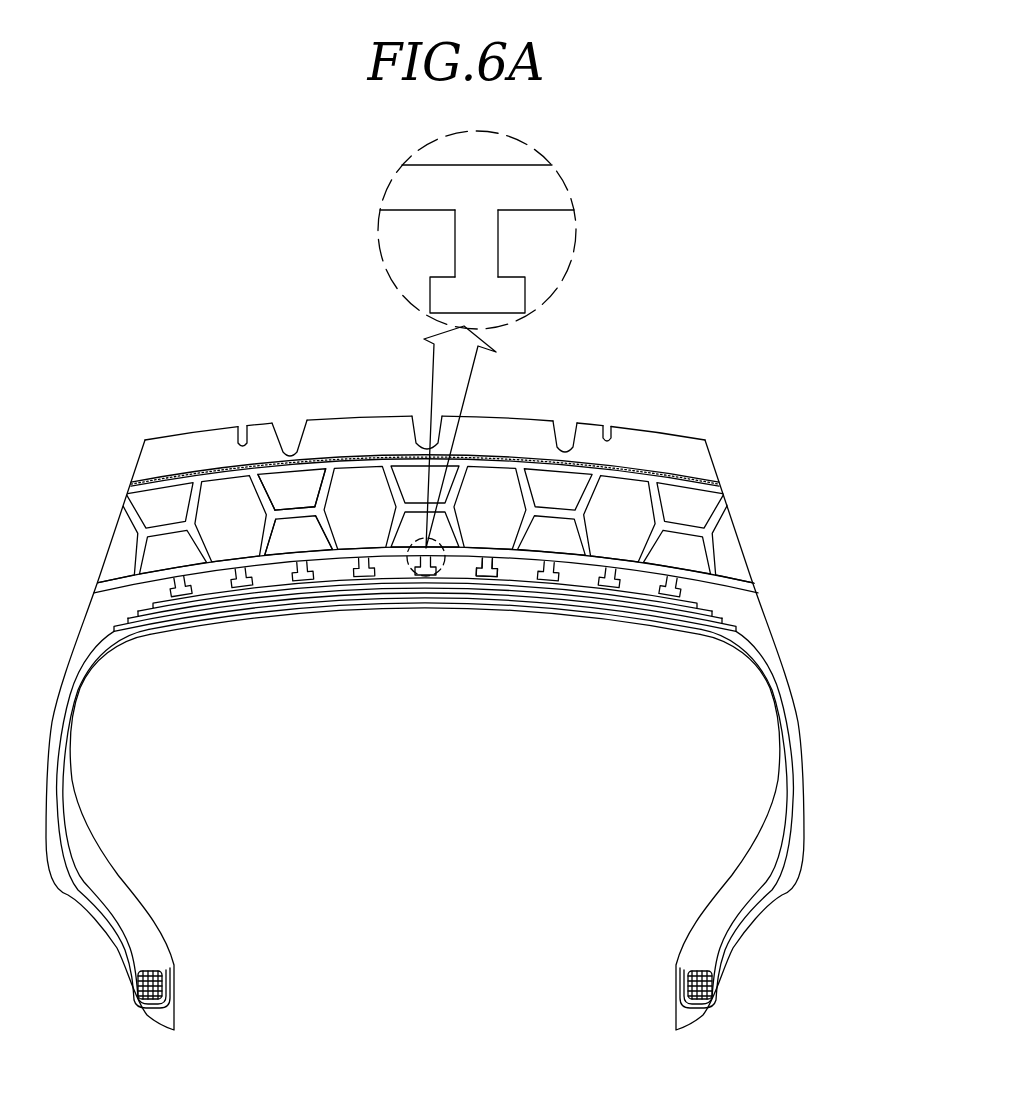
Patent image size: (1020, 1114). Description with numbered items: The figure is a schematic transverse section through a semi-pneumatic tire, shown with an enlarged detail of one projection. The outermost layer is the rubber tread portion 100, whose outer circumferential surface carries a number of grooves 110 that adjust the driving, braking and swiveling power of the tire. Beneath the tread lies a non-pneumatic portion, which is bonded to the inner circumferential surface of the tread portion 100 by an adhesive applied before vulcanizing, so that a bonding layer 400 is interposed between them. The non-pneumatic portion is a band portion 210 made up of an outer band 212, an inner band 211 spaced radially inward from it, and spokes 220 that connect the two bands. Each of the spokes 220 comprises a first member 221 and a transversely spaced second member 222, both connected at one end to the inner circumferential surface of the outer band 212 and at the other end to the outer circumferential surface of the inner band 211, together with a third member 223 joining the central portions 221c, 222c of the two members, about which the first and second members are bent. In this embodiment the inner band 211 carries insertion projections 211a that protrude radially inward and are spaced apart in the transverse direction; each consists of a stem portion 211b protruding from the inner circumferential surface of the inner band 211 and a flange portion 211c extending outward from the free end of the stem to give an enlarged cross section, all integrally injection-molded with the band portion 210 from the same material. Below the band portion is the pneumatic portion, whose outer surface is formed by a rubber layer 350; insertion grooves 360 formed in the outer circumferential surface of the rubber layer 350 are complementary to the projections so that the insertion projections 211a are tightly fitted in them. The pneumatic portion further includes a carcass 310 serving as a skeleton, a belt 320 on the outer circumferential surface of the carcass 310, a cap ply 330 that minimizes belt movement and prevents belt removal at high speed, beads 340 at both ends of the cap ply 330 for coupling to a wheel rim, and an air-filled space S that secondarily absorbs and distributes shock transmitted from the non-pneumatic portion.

The tread portion 100 is at (665, 444).
The grooves 110 is at (559, 436).
The bonding layer 400 is at (153, 477).
The band portion 210 is at (838, 472).
The outer band 212 is at (718, 480).
The spokes 220 is at (218, 350).
The first member 221 is at (247, 497).
The second member 222 is at (340, 490).
The third member 223 is at (300, 512).
The central portion of first member 221c is at (250, 508).
The central portion of second member 222c is at (350, 502).
The inner band 211 is at (697, 567).
The insertion projections 211a is at (547, 667).
The stem portion 211b is at (490, 238).
The flange portion 211c is at (508, 298).
The insertion grooves 360 is at (573, 582).
The carcass 310 is at (671, 623).
The belt 320 is at (701, 616).
The cap ply 330 is at (723, 625).
The beads 340 is at (688, 977).
The rubber layer 350 is at (768, 632).
The space S is at (425, 890).